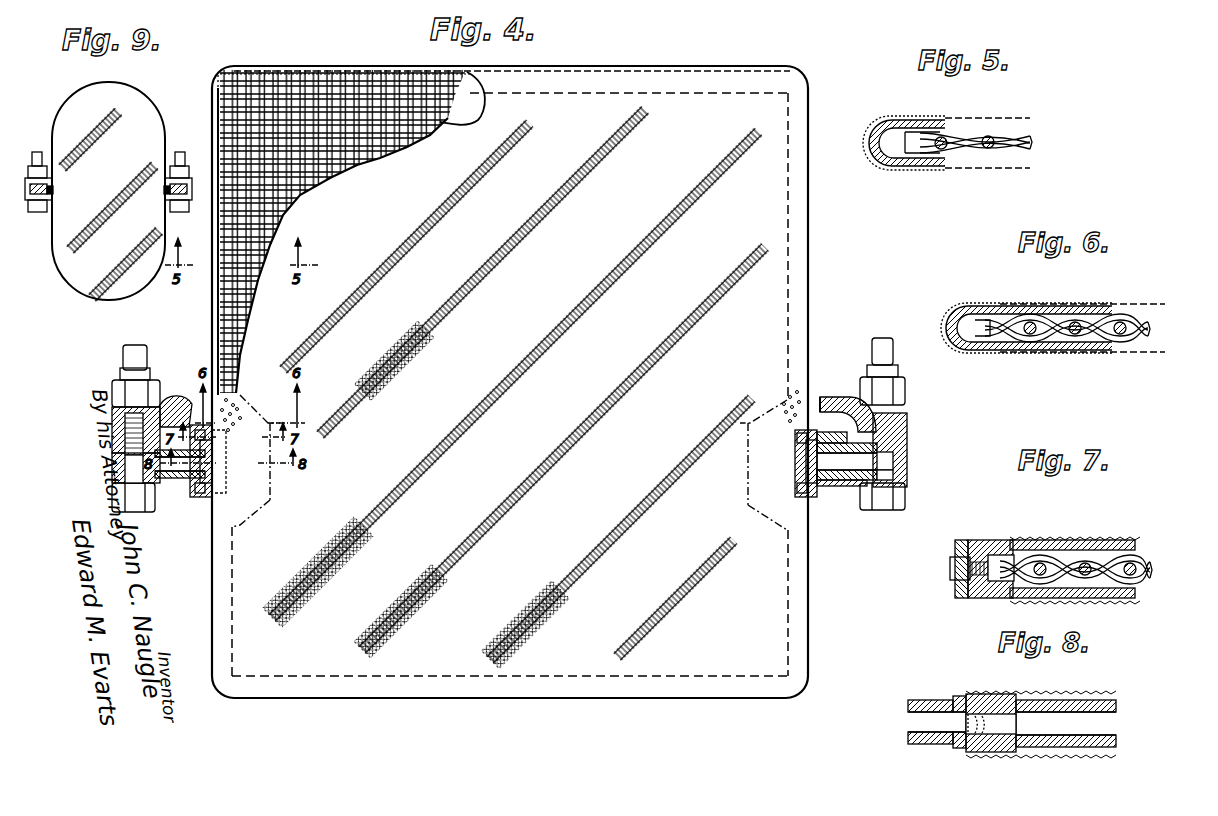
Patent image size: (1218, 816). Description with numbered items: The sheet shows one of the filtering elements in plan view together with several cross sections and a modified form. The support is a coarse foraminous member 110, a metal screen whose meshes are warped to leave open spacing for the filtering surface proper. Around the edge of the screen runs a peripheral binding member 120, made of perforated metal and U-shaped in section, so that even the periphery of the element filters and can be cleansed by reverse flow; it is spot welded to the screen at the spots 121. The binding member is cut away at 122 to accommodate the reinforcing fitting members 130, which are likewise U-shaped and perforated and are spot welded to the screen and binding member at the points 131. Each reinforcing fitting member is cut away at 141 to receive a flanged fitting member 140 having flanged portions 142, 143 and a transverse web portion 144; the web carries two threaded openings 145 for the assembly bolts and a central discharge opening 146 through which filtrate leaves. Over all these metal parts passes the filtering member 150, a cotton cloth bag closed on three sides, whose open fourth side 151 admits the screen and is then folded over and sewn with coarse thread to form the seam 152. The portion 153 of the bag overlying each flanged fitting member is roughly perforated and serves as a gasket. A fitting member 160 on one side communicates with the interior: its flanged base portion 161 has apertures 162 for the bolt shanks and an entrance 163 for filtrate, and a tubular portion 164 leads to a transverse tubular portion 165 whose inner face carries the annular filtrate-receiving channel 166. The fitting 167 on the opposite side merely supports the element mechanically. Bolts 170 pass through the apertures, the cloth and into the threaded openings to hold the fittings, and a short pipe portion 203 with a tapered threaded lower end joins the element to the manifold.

In FIG. 4, the foraminous member 110 is at (330, 112).
In FIG. 5, the foraminous member 110 is at (1026, 141).
In FIG. 6, the foraminous member 110 is at (1150, 329).
In FIG. 4, the peripheral binding member 120 is at (266, 70).
In FIG. 5, the peripheral binding member 120 is at (876, 160).
In FIG. 4, the spot welding spots 121 is at (237, 88).
In FIG. 4, the cut-away portion of binding member 122 is at (212, 540).
In FIG. 4, the reinforcing fitting member 130 is at (523, 385).
In FIG. 9, the reinforcing fitting member 130 is at (108, 192).
In FIG. 6, the reinforcing fitting member 130 is at (1022, 352).
In FIG. 8, the reinforcing fitting member 130 is at (1116, 706).
In FIG. 4, the spot welding points 131 is at (276, 500).
In FIG. 9, the spot welding points 131 is at (104, 299).
In FIG. 4, the flanged fitting member 140 is at (270, 448).
In FIG. 7, the flanged fitting member 140 is at (990, 540).
In FIG. 8, the flanged fitting member 140 is at (990, 700).
In FIG. 4, the cut-away portion of reinforcing fitting member 141 is at (224, 478).
In FIG. 7, the flanged portion 142 is at (1018, 540).
In FIG. 7, the flanged portion 143 is at (988, 598).
In FIG. 7, the transverse web portion 144 is at (957, 585).
In FIG. 7, the threaded opening 145 is at (956, 555).
In FIG. 8, the central discharge opening 146 is at (965, 703).
In FIG. 4, the filtering member 150 is at (510, 382).
In FIG. 4, the open side of bag 151 is at (592, 69).
In FIG. 4, the seam 152 is at (740, 68).
In FIG. 4, the bag portion overlying flanged fitting member 153 is at (212, 500).
In FIG. 4, the fitting member 160 is at (840, 398).
In FIG. 4, the flanged base portion 161 is at (818, 440).
In FIG. 4, the aperture 162 is at (816, 440).
In FIG. 4, the entrance 163 is at (812, 464).
In FIG. 4, the tubular portion 164 is at (836, 480).
In FIG. 4, the transverse tubular portion 165 is at (895, 482).
In FIG. 4, the annular filtrate-receiving channel 166 is at (900, 470).
In FIG. 4, the fitting 167 is at (178, 405).
In FIG. 4, the bolt 170 is at (497, 473).
In FIG. 4, the short pipe portion 203 is at (128, 478).